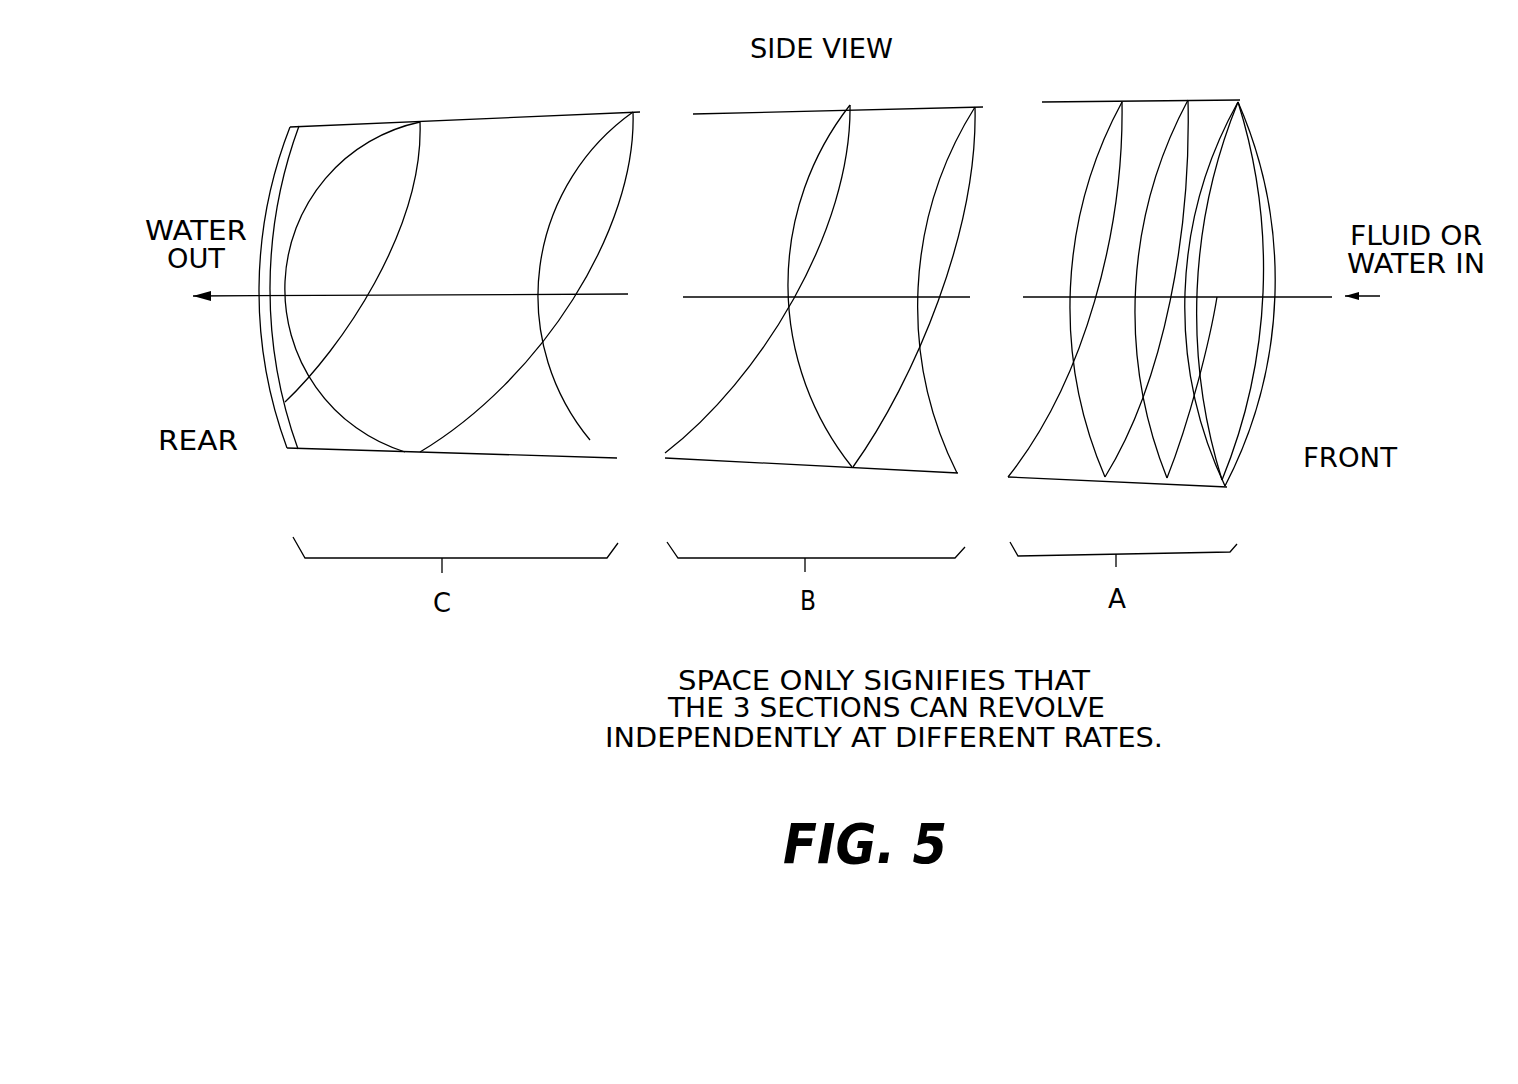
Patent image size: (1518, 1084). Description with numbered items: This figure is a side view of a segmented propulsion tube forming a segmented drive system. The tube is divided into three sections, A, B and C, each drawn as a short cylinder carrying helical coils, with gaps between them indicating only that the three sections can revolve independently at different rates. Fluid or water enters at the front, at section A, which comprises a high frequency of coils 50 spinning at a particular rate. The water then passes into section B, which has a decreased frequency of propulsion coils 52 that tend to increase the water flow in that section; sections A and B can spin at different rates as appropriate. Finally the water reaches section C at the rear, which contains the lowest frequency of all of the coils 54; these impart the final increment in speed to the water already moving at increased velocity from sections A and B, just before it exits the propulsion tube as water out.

The coils of section C 54 is at (449, 306).
The propulsion coils of section B 52 is at (824, 311).
The coils of section A 50 is at (1141, 311).